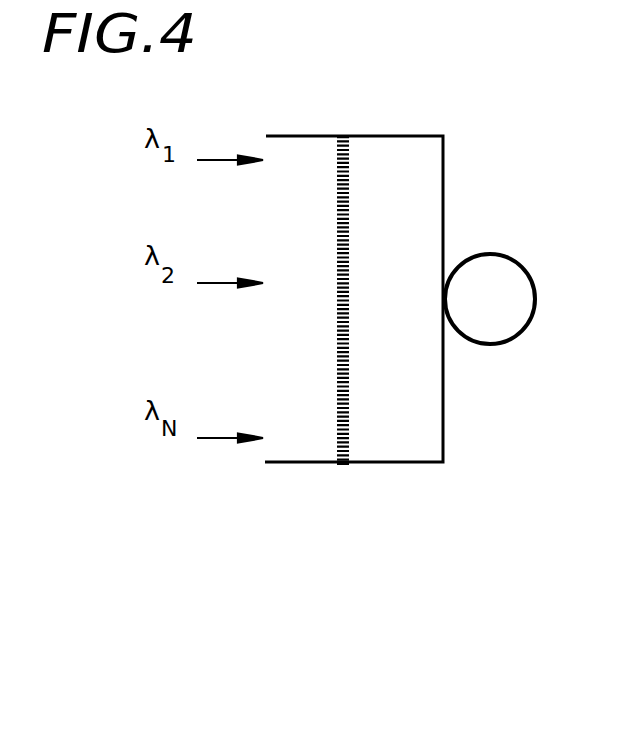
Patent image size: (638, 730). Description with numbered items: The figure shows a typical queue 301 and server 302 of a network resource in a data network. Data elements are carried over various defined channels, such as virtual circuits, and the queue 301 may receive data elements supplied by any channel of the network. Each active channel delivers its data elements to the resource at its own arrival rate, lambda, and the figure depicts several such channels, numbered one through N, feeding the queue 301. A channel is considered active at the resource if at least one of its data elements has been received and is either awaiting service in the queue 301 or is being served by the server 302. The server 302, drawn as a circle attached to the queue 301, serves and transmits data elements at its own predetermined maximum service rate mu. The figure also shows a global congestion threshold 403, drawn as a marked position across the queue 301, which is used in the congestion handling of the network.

The queue 301 is at (358, 463).
The server 302 is at (493, 253).
The global congestion threshold 403 is at (348, 136).